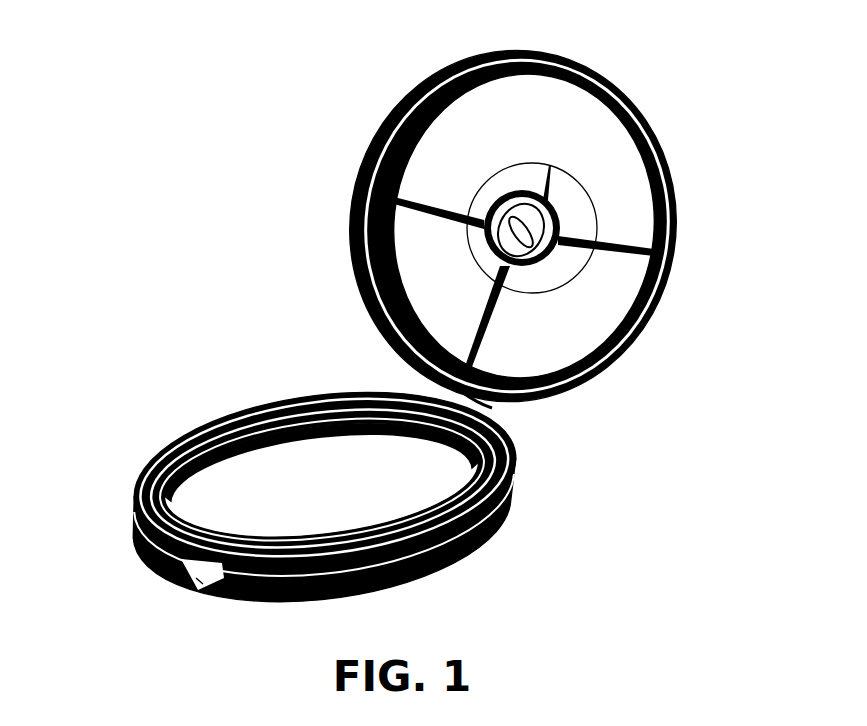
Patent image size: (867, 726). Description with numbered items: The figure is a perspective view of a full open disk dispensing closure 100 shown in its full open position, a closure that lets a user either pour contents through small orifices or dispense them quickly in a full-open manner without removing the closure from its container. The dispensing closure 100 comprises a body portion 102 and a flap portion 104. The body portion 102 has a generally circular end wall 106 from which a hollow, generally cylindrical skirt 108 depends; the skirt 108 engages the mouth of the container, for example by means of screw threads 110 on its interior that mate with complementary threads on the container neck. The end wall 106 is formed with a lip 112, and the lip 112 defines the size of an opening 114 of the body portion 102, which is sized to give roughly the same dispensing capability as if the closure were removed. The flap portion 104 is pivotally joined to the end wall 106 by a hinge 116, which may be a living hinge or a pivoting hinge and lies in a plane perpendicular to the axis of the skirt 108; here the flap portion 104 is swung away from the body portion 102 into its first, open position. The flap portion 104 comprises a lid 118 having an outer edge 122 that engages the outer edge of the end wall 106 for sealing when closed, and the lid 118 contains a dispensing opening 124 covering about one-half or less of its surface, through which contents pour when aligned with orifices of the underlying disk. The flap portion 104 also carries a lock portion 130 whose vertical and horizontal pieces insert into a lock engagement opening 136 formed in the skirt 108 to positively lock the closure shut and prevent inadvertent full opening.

The full open disk dispensing closure 100 is at (397, 314).
The body portion 102 is at (315, 492).
The flap portion 104 is at (504, 220).
The end wall 106 is at (134, 490).
The skirt 108 is at (477, 543).
The screw threads 110 is at (294, 477).
The lip 112 is at (523, 485).
The opening 114 is at (235, 488).
The hinge 116 is at (473, 402).
The lid 118 is at (573, 325).
The outer edge 122 is at (479, 220).
The dispensing opening 124 is at (420, 112).
The lock portion 130 is at (530, 52).
The lock engagement opening 136 is at (188, 587).